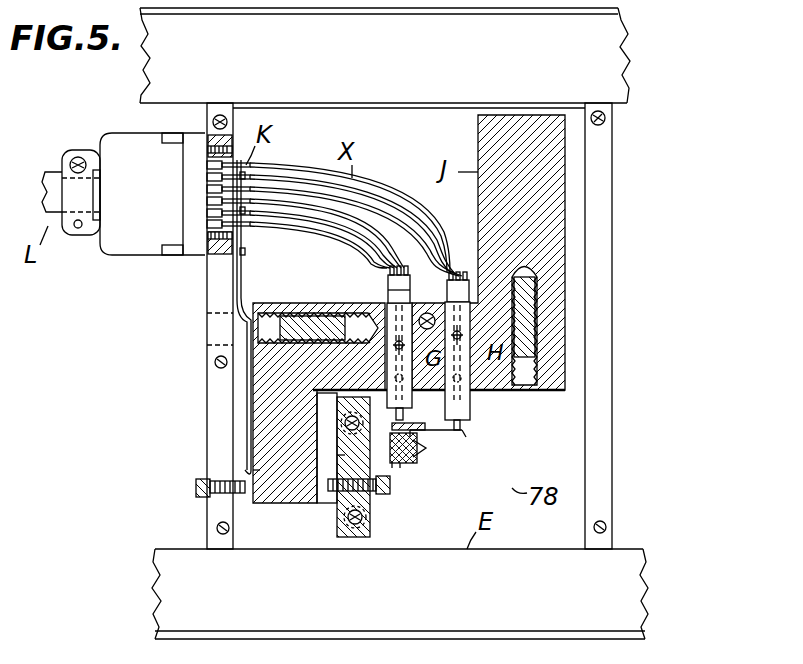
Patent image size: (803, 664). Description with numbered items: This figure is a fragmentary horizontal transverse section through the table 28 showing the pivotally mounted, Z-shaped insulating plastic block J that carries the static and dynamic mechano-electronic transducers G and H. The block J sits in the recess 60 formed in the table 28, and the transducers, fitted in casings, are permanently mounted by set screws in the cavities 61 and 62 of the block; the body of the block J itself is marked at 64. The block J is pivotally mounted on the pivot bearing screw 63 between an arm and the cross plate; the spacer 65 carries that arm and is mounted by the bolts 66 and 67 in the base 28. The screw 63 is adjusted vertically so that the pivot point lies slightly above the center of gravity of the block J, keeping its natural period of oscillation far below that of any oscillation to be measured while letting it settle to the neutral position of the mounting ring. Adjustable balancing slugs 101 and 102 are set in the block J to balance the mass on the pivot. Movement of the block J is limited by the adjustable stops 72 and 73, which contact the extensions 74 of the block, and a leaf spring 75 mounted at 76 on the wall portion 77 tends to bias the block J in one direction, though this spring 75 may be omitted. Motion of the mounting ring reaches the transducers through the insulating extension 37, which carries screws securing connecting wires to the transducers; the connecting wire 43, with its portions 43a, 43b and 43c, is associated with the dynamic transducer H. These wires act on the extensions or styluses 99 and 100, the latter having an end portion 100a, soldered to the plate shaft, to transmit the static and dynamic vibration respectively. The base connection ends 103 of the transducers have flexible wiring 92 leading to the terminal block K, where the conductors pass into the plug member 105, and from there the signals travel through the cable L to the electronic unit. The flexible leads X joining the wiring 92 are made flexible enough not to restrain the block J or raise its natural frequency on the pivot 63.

The table 28 is at (617, 68).
The recess 60 is at (394, 115).
The wall portion 77 is at (215, 282).
The plug member 105 is at (128, 237).
The flexible wiring 92 is at (383, 197).
The mounting block 64 is at (318, 400).
The cavity 61 is at (372, 358).
The adjustable balancing slug 102 is at (537, 322).
The pivot bearing screw 63 is at (431, 312).
The stylus 99 is at (412, 407).
The contact element 43a is at (397, 370).
The base connection end 103 is at (386, 272).
The adjustable balancing slug 101 is at (470, 300).
The cavity 62 is at (470, 400).
The stylus 100 is at (465, 430).
The bar end 100a is at (466, 436).
The connecting wire 43 is at (452, 432).
The switch arm 43c is at (516, 477).
The insulating extension 37 is at (394, 463).
The switch contact 43b is at (401, 468).
The bolt 66 is at (342, 420).
The spacer 65 is at (343, 455).
The bolt 67 is at (340, 512).
The adjustable stop 73 is at (384, 498).
The leaf spring 75 is at (248, 387).
The mounting of leaf spring 76 is at (248, 300).
The extension 74 is at (267, 478).
The adjustable stop 72 is at (196, 492).